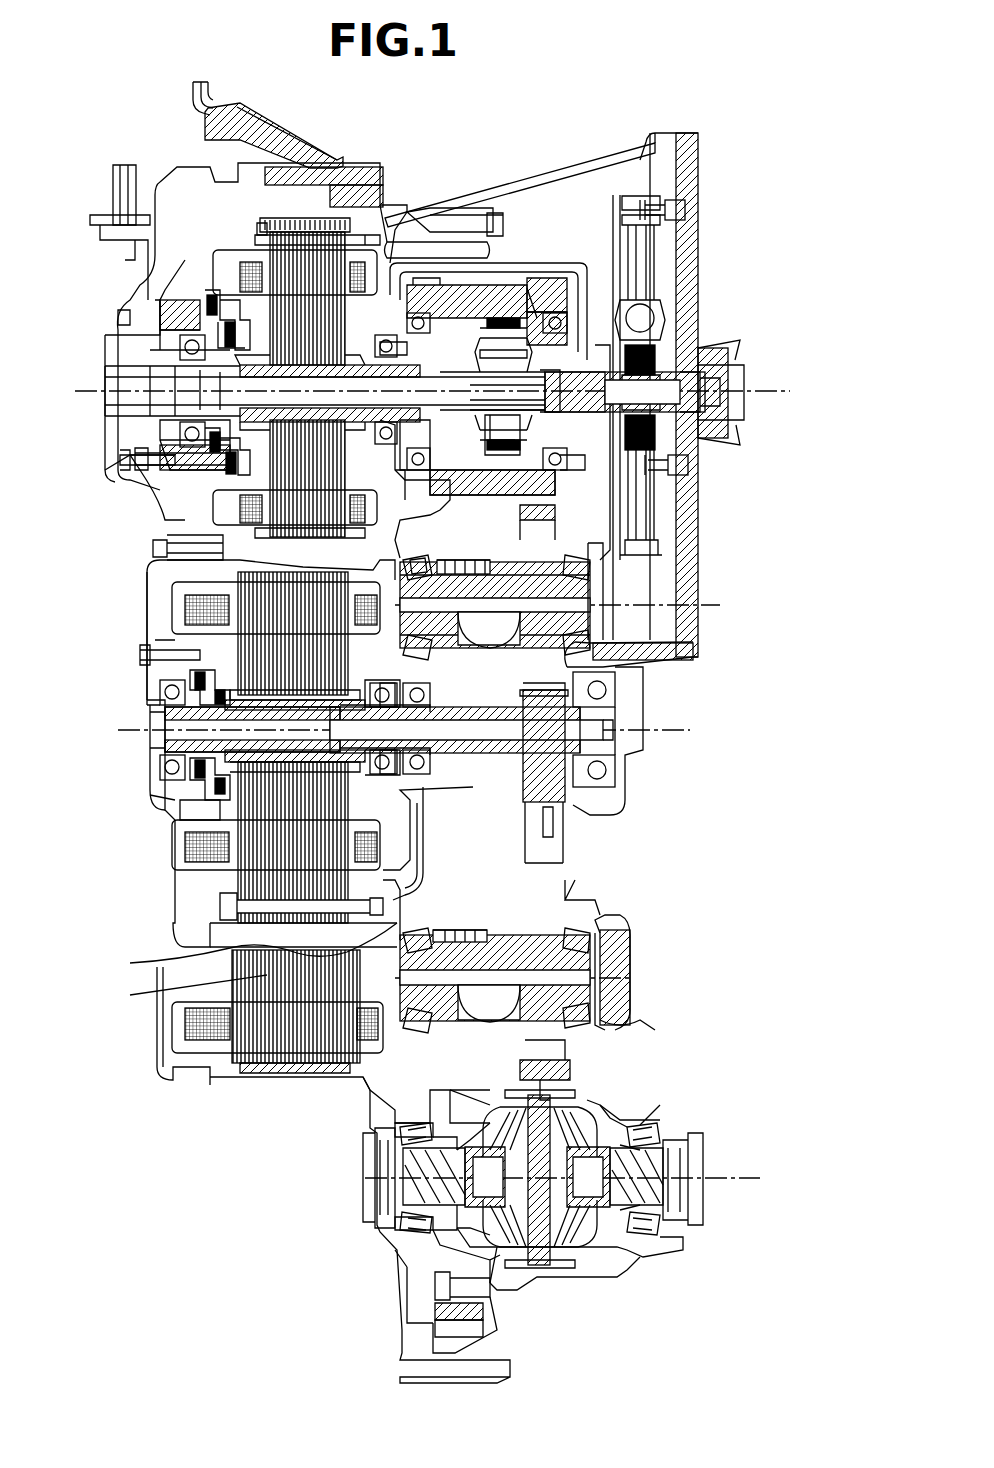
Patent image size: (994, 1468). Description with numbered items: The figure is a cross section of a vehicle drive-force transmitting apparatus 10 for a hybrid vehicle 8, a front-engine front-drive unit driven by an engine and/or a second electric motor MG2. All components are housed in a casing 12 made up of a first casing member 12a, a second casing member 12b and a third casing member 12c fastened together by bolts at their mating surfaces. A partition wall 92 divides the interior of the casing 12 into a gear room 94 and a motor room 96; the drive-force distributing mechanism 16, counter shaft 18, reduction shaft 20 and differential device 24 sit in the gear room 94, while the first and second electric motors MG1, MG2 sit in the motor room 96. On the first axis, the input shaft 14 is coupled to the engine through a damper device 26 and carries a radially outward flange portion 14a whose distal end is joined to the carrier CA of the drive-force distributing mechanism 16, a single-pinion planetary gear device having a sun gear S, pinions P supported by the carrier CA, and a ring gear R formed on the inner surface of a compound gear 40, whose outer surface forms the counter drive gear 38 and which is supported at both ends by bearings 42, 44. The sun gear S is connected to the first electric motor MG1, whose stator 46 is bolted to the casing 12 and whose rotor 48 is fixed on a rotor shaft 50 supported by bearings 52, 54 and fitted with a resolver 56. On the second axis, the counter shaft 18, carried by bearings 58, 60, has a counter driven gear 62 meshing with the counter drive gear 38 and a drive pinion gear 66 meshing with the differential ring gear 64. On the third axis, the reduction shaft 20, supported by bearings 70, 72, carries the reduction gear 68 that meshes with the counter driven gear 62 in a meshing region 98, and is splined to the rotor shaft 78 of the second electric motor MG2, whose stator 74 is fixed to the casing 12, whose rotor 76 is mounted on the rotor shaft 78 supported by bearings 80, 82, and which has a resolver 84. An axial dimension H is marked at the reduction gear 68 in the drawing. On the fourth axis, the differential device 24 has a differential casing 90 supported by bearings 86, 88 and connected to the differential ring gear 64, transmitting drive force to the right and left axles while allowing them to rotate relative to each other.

The hybrid vehicle 8 is at (562, 98).
The vehicle drive-force transmitting apparatus 10 is at (752, 190).
The casing 12 is at (366, 732).
The first casing member 12a is at (577, 180).
The second casing member 12b is at (425, 218).
The third casing member 12c is at (102, 268).
The input shaft 14 is at (735, 372).
The flange portion 14a is at (508, 435).
The drive-force distributing mechanism 16 is at (498, 417).
The counter shaft 18 is at (518, 588).
The reduction shaft 20 is at (470, 748).
The differential device 24 is at (598, 1250).
The damper device 26 is at (660, 290).
The counter drive gear 38 is at (557, 272).
The compound gear 40 is at (501, 368).
The bearing 42 is at (563, 460).
The bearing 44 is at (420, 465).
The stator 46 is at (292, 260).
The rotor 48 is at (330, 327).
The rotor shaft 50 is at (298, 372).
The bearing 52 is at (352, 450).
The bearing 54 is at (195, 434).
The resolver 56 is at (203, 297).
The bearing 58 is at (645, 660).
The bearing 60 is at (400, 558).
The counter driven gear 62 is at (520, 515).
The differential ring gear 64 is at (470, 1328).
The drive pinion gear 66 is at (452, 655).
The reduction gear 68 is at (535, 765).
The bearing 70 is at (600, 770).
The bearing 72 is at (470, 795).
The stator 74 is at (280, 872).
The rotor 76 is at (278, 662).
The rotor shaft 78 is at (250, 708).
The bearing 80 is at (348, 790).
The bearing 82 is at (165, 683).
The resolver 84 is at (180, 803).
The bearing 86 is at (645, 1120).
The bearing 88 is at (420, 1228).
The differential casing 90 is at (612, 1118).
The partition wall 92 is at (395, 502).
The gear room 94 is at (510, 790).
The motor room 96 is at (200, 195).
The meshing region 98 is at (600, 690).
The ring gear R is at (505, 300).
The pinions P is at (486, 333).
The carrier CA is at (480, 356).
The sun gear S is at (470, 420).
The gear width H is at (563, 870).
The first electric motor MG1 is at (296, 359).
The second electric motor MG2 is at (249, 844).